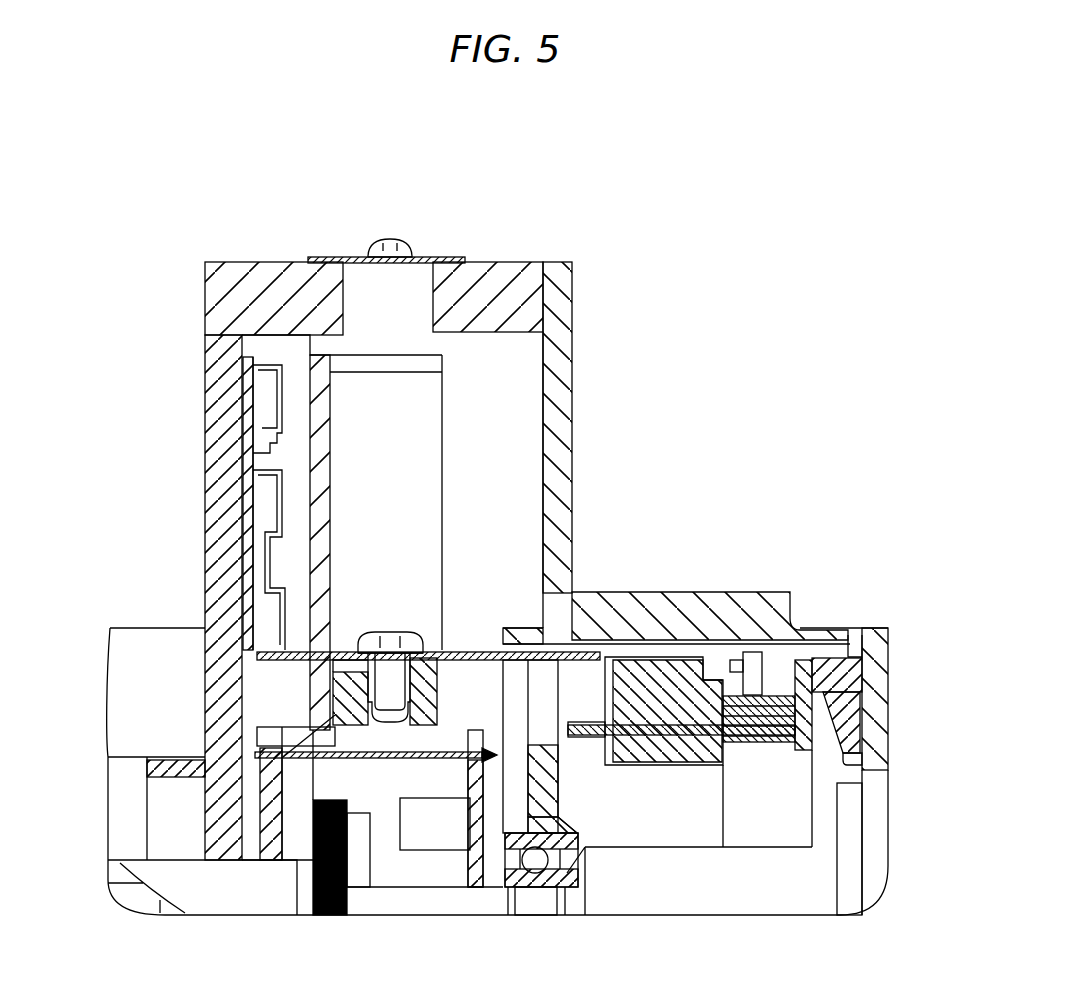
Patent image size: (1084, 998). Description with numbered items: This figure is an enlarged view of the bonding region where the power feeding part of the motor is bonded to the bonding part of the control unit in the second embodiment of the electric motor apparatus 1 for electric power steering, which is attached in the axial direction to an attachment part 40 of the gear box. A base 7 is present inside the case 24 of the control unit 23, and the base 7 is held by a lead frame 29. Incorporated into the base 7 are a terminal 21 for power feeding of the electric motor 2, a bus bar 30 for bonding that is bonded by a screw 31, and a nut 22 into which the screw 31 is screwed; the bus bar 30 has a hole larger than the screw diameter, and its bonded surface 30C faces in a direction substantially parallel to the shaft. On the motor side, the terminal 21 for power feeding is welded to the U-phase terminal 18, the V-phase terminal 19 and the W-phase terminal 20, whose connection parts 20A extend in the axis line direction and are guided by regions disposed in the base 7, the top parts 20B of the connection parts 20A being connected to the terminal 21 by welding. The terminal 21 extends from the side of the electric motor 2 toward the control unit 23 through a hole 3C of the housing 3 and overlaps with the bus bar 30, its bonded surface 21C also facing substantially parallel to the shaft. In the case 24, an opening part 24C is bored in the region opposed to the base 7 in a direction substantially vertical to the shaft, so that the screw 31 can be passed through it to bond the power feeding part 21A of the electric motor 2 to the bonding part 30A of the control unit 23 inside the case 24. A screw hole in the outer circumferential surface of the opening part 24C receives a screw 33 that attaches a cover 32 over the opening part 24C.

The electric motor apparatus 1 is at (812, 598).
The electric motor 2 is at (855, 628).
The housing 3 is at (738, 598).
The hole 3C is at (540, 733).
The base 7 is at (297, 863).
The U-phase terminal 18 is at (812, 673).
The V-phase terminal 19 is at (812, 703).
The W-phase terminal 20 is at (812, 753).
The connection part 20A is at (707, 750).
The top part 20B is at (555, 735).
The terminal for power feeding 21 is at (652, 650).
The power feeding part 21A is at (433, 650).
The bonded surface 21C is at (425, 655).
The nut 22 is at (455, 812).
The control unit 23 is at (195, 443).
The case 24 is at (217, 350).
The opening part 24C is at (322, 367).
The lead frame 29 is at (357, 314).
The bus bar for bonding 30 is at (340, 668).
The bonding part 30A is at (345, 662).
The bonded surface 30C is at (357, 653).
The screw 31 is at (390, 630).
The cover 32 is at (323, 256).
The screw 33 is at (378, 239).
The attachment part 40 is at (145, 663).